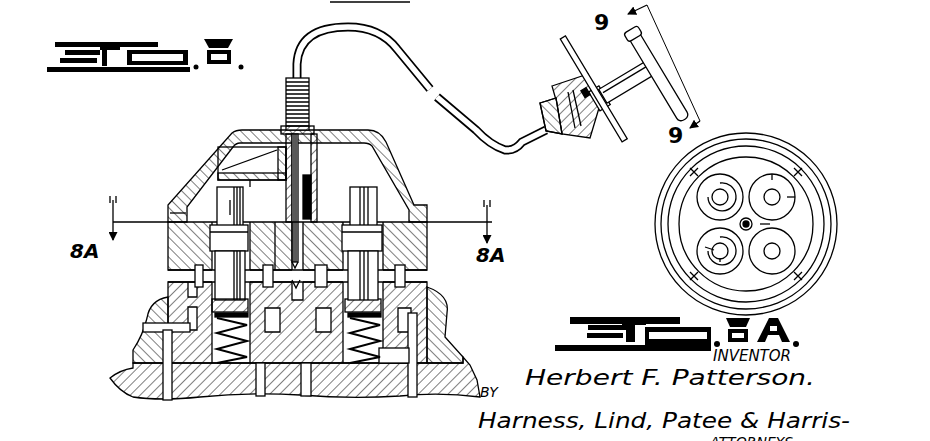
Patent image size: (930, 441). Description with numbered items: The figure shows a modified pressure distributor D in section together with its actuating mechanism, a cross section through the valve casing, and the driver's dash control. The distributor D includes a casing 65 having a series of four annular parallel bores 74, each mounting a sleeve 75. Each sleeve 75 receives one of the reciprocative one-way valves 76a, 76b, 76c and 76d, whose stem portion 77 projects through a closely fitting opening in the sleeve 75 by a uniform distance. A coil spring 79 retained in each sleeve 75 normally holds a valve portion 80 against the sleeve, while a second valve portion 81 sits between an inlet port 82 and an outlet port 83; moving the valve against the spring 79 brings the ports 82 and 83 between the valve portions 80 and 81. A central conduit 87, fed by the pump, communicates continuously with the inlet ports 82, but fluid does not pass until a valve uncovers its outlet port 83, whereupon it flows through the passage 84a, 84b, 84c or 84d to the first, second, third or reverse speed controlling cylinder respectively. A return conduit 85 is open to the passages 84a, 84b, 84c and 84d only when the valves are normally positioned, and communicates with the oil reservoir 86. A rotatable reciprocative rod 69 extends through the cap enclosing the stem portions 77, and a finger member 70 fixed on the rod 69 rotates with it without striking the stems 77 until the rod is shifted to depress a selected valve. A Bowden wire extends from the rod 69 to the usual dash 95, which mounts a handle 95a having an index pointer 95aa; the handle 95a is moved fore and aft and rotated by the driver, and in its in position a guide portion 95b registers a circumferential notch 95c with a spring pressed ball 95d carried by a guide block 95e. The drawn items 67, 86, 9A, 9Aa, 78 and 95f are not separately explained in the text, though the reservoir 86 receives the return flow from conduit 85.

In FIG. 8, the supply tube 67 is at (332, 2).
In FIG. 8, the oil reservoir 86 is at (398, 2).
In FIG. 8, the finger member 70 is at (226, 134).
In FIG. 8A, the finger member 70 is at (772, 224).
In FIG. 8, the plate 9A is at (332, 141).
In FIG. 8, the plate aperture 9Aa is at (262, 199).
In FIG. 8, the pressure distributor D is at (383, 158).
In FIG. 8, the reciprocative one-way valve 76a is at (222, 192).
In FIG. 8A, the reciprocative one-way valve 76a is at (712, 197).
In FIG. 8, the reciprocative one-way valve 76b is at (312, 188).
In FIG. 8A, the reciprocative one-way valve 76b is at (785, 195).
In FIG. 8, the reciprocative one-way valve 76c is at (364, 203).
In FIG. 8A, the reciprocative one-way valve 76c is at (773, 262).
In FIG. 8A, the reciprocative one-way valve 76d is at (712, 252).
In FIG. 8, the stem portion 77 is at (248, 200).
In FIG. 8A, the stem portion 77 is at (714, 249).
In FIG. 8, the rotatable reciprocative rod 69 is at (310, 211).
In FIG. 8A, the rotatable reciprocative rod 69 is at (740, 224).
In FIG. 8, the valve portion 80 is at (204, 226).
In FIG. 8A, the valve portion 80 is at (722, 260).
In FIG. 8, the casing 65 is at (222, 236).
In FIG. 8A, the casing 65 is at (802, 256).
In FIG. 8, the inlet port 82 is at (212, 282).
In FIG. 8, the second valve portion 81 is at (238, 301).
In FIG. 8, the outlet port 83 is at (185, 327).
In FIG. 8, the passage 84a is at (168, 392).
In FIG. 8A, the passage 84a is at (690, 173).
In FIG. 8A, the passage 84b is at (815, 158).
In FIG. 8, the passage 84c is at (428, 343).
In FIG. 8A, the passage 84c is at (802, 277).
In FIG. 8A, the passage 84d is at (692, 278).
In FIG. 8, the annular parallel bore 74 is at (228, 393).
In FIG. 8A, the annular parallel bore 74 is at (774, 176).
In FIG. 8, the return conduit 85 is at (195, 397).
In FIG. 8, the sleeve 75 is at (262, 397).
In FIG. 8A, the sleeve 75 is at (790, 202).
In FIG. 8, the central conduit 87 is at (307, 397).
In FIG. 8, the coil spring 79 is at (364, 394).
In FIG. 8, the tube (78') 78 is at (507, 160).
In FIG. 9, the dash 95 is at (612, 101).
In FIG. 9, the handle 95a is at (656, 55).
In FIG. 9, the index pointer 95aa is at (642, 40).
In FIG. 9, the guide portion 95b is at (545, 120).
In FIG. 9, the circumferential notch 95c is at (596, 90).
In FIG. 9, the spring pressed ball 95d is at (564, 135).
In FIG. 9, the guide block 95e is at (554, 102).
In FIG. 9, the plate 95f is at (592, 128).